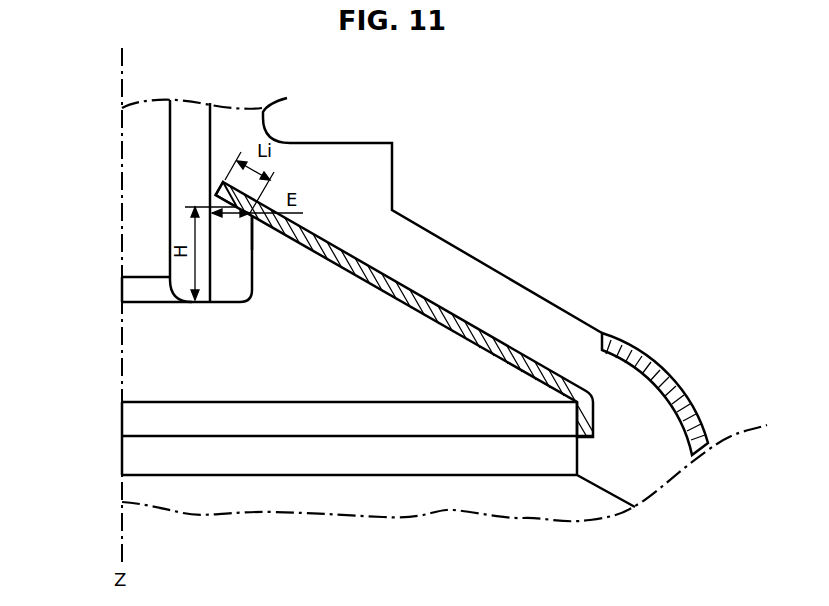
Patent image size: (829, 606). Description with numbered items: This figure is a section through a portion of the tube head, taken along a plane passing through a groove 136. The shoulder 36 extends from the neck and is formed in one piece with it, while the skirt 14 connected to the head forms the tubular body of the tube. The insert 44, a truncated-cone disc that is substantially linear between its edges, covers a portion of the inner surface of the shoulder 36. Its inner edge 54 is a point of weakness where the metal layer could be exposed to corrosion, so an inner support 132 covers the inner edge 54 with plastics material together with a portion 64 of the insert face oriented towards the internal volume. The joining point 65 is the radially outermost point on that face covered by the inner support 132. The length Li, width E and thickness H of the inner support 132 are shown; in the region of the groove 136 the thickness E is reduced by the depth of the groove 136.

The skirt 14 is at (650, 362).
The shoulder 36 is at (490, 266).
The insert 44 is at (382, 291).
The inner edge 54 is at (215, 190).
The portion of the face of the insert 64 is at (237, 205).
The joining point 65 is at (250, 214).
The inner support 132 is at (240, 262).
The groove 136 is at (178, 222).